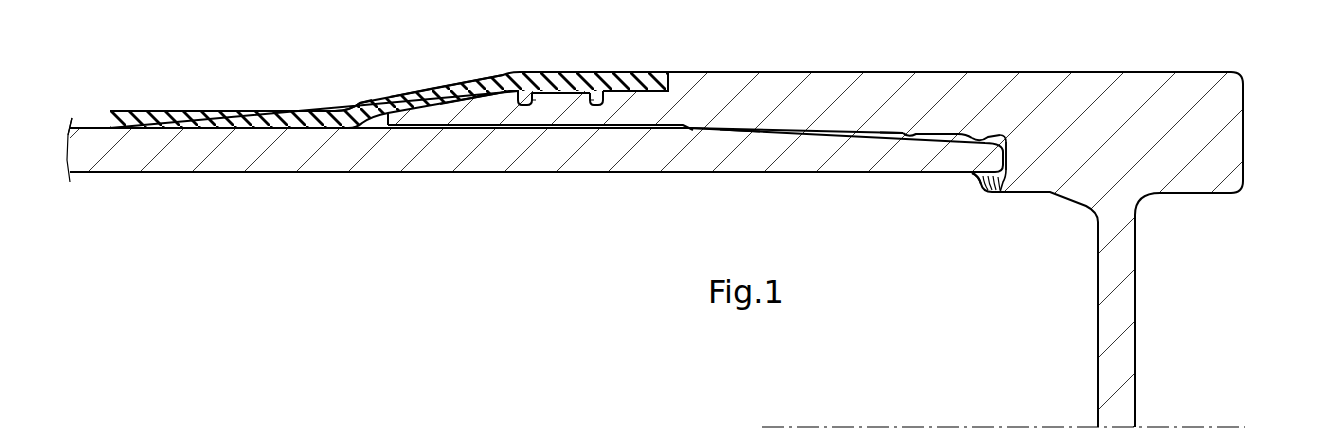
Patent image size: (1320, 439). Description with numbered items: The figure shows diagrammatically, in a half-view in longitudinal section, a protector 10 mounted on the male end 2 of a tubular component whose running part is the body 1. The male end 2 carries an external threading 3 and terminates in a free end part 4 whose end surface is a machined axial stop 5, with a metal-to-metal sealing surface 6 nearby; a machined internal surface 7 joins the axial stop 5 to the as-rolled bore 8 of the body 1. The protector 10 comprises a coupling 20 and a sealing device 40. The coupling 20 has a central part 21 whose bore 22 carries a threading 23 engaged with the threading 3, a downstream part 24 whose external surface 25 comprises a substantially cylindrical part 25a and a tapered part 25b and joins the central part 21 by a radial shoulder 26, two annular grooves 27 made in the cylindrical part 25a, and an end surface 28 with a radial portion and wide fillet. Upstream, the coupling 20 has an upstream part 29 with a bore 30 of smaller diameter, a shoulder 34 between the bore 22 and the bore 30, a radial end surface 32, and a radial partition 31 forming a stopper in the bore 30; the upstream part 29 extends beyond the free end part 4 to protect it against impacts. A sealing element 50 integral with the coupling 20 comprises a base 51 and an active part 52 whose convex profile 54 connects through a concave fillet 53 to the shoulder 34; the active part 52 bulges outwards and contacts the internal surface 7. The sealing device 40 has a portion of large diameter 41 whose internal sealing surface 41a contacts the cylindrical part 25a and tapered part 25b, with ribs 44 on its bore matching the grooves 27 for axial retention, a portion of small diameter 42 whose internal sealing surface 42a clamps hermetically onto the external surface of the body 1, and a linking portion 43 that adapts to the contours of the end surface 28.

The body 1 is at (120, 173).
The male end 2 is at (815, 165).
The external threading 3 is at (922, 133).
The free end part 4 is at (972, 167).
The axial stop surface 5 is at (1034, 195).
The metal-to-metal sealing surface 6 is at (1005, 137).
The machined internal surface 7 is at (972, 180).
The as-rolled bore 8 is at (227, 175).
The protector 10 is at (683, 45).
The coupling 20 is at (1098, 73).
The central part 21 is at (836, 112).
The bore 22 is at (963, 133).
The threading 23 is at (738, 133).
The downstream part 24 is at (458, 121).
The external surface 25 is at (520, 87).
The substantially cylindrical part 25a is at (627, 85).
The tapered part 25b is at (412, 83).
The radial shoulder 26 is at (655, 78).
The annular groove 27 is at (596, 98).
The end surface 28 is at (377, 117).
The upstream part 29 is at (1143, 143).
The bore 30 is at (1188, 194).
The radial partition 31 is at (1127, 335).
The radial end surface 32 is at (1244, 125).
The shoulder 34 is at (980, 133).
The sealing device 40 is at (365, 86).
The portion of large diameter 41 is at (473, 82).
The internal sealing surface 41a is at (493, 93).
The portion of small diameter 42 is at (163, 112).
The internal sealing surface 42a is at (205, 134).
The linking portion 43 is at (357, 105).
The rib 44 is at (603, 106).
The sealing element 50 is at (995, 196).
The base 51 is at (991, 194).
The active part 52 is at (987, 192).
The concave fillet 53 is at (1001, 194).
The convex profile 54 is at (983, 188).